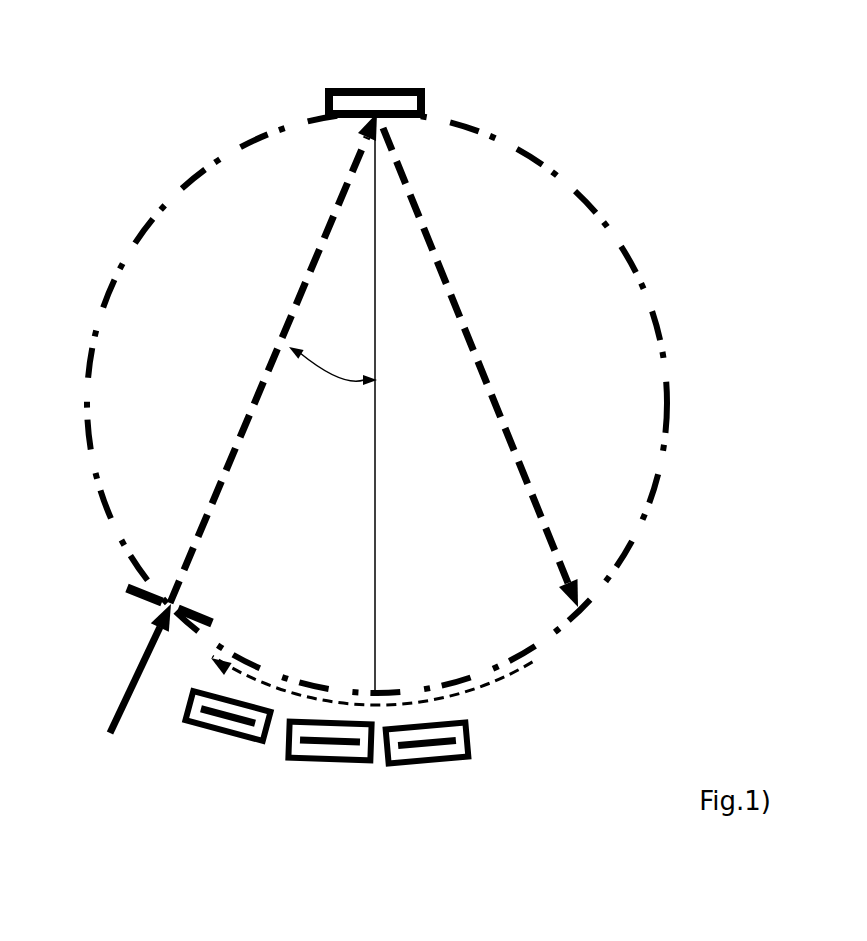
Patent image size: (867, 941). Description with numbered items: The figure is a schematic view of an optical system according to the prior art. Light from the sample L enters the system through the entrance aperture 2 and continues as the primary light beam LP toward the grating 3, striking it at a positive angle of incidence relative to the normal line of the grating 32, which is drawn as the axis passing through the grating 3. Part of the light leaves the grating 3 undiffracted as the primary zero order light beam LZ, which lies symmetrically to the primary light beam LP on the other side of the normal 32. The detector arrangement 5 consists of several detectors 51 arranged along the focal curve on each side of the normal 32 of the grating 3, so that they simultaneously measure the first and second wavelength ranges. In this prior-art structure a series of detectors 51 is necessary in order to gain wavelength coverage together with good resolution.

The grating 3 is at (397, 88).
The normal line of the grating 32 is at (380, 588).
The entrance aperture 2 is at (127, 589).
The detector arrangement 5 is at (339, 786).
The detectors 51 is at (220, 732).
The light from the sample L is at (128, 668).
The primary light beam LP is at (270, 358).
The primary zero order light beam LZ is at (480, 367).